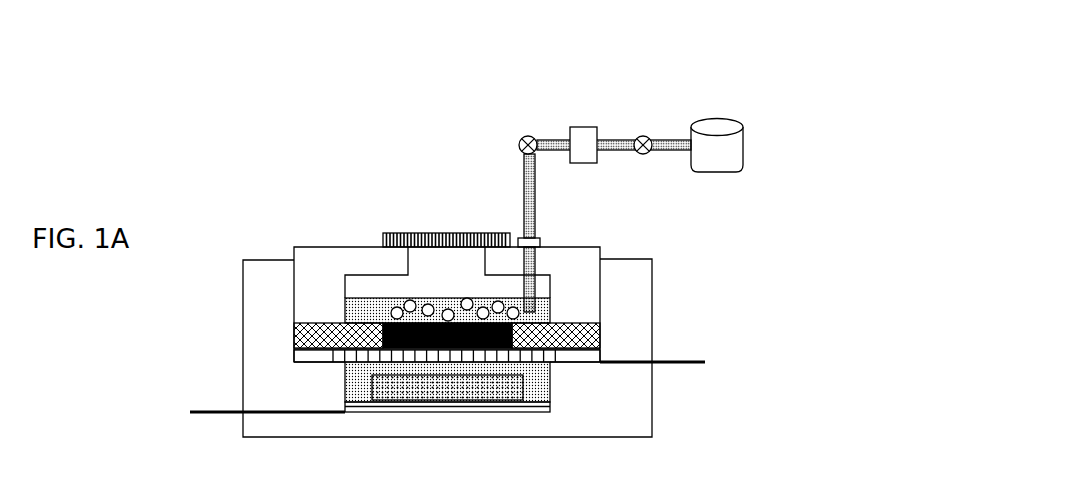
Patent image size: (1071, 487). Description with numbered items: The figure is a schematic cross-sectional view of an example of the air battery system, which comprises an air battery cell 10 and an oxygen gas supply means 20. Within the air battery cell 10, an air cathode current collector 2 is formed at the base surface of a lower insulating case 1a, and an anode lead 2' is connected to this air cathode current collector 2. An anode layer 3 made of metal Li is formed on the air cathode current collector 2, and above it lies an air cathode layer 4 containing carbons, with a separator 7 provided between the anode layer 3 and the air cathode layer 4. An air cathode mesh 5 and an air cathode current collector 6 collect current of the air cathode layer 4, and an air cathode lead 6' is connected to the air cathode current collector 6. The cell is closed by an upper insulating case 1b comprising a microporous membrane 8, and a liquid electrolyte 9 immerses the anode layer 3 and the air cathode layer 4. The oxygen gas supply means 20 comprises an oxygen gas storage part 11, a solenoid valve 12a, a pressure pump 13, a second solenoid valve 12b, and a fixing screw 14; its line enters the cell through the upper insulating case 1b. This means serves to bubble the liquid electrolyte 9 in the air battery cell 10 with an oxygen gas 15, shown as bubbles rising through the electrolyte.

The lower insulating case 1a is at (625, 430).
The upper insulating case 1b is at (315, 259).
The air cathode current collector 2 is at (521, 416).
The anode lead 2' is at (265, 430).
The anode layer 3 is at (503, 385).
The air cathode layer 4 is at (512, 328).
The air cathode mesh 5 is at (294, 325).
The air cathode current collector 6 is at (448, 352).
The air cathode lead 6' is at (665, 380).
The separator 7 is at (505, 353).
The microporous membrane 8 is at (447, 233).
The liquid electrolyte 9 is at (530, 317).
The air battery cell 10 is at (501, 307).
The oxygen gas storage part 11 is at (715, 125).
The solenoid valve 12a is at (641, 136).
The solenoid valve 12b is at (528, 136).
The pressure pump 13 is at (583, 133).
The fixing screw 14 is at (536, 240).
The oxygen gas 15 is at (466, 302).
The oxygen gas supply means 20 is at (518, 68).